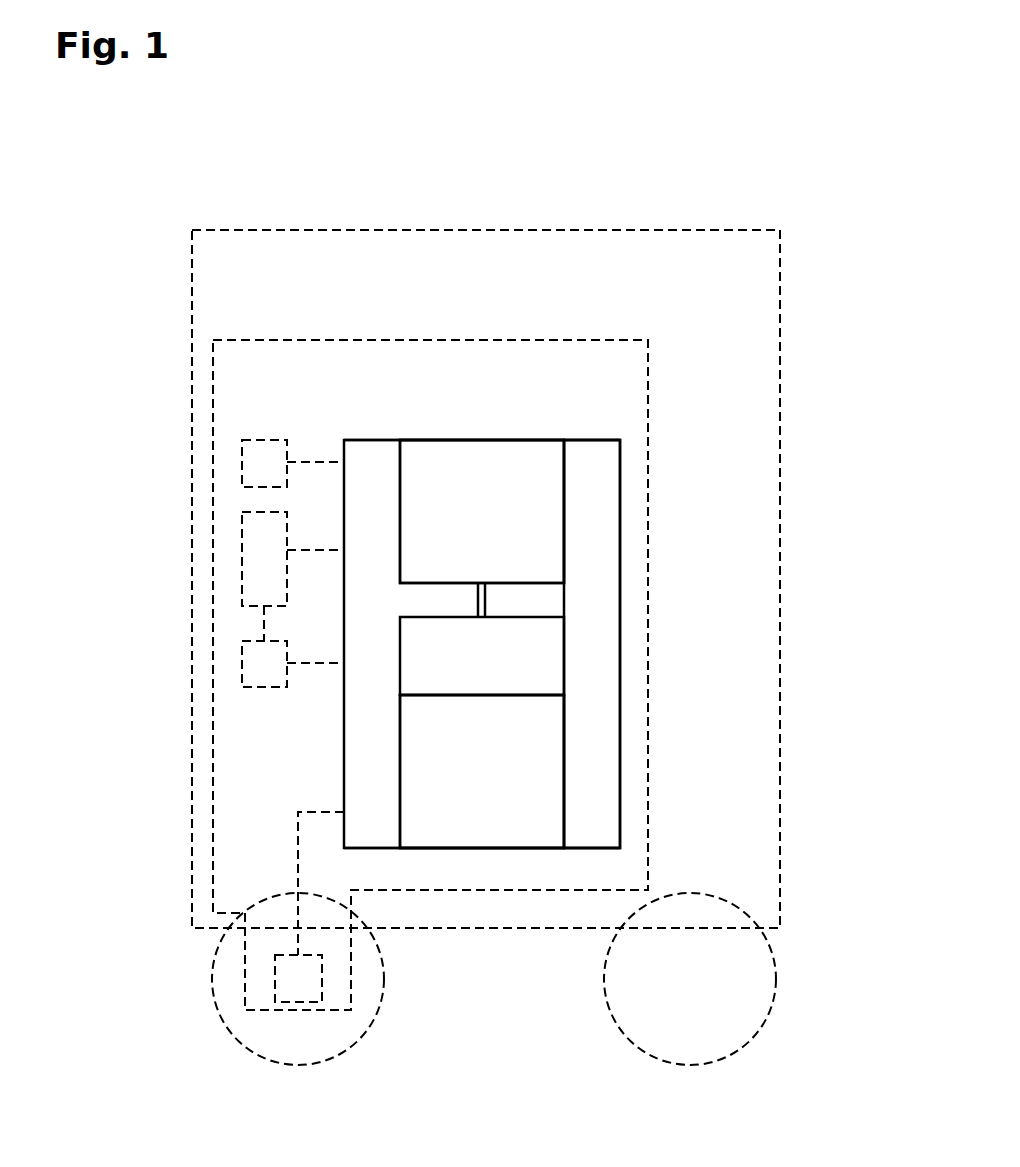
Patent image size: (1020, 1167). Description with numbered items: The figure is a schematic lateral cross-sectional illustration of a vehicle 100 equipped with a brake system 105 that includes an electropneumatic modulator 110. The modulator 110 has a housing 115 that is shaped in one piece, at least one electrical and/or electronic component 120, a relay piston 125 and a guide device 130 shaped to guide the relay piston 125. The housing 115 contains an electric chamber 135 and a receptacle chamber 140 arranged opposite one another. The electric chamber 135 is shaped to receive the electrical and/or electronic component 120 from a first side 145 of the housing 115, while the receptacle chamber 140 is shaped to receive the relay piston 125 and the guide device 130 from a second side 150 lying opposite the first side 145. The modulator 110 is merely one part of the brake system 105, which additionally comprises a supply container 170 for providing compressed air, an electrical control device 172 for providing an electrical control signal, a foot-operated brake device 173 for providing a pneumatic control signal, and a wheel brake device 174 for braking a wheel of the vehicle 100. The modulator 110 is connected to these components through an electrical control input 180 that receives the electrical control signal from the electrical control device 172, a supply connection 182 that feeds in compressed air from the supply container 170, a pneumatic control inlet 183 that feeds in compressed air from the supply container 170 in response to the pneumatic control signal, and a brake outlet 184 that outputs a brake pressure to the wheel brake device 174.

The vehicle 100 is at (287, 230).
The brake system 105 is at (565, 338).
The electropneumatic modulator 110 is at (447, 426).
The housing 115 is at (593, 493).
The electrical and/or electronic component 120 is at (540, 527).
The relay piston 125 is at (540, 650).
The guide device 130 is at (540, 771).
The electric chamber 135 is at (420, 462).
The receptacle chamber 140 is at (494, 822).
The first side 145 is at (498, 414).
The second side 150 is at (461, 867).
The supply container 170 is at (255, 560).
The electrical control device 172 is at (252, 466).
The foot-operated brake device 173 is at (255, 665).
The wheel brake device 174 is at (300, 992).
The electrical control input 180 is at (344, 462).
The supply connection 182 is at (344, 550).
The pneumatic control inlet 183 is at (344, 663).
The brake outlet 184 is at (344, 812).